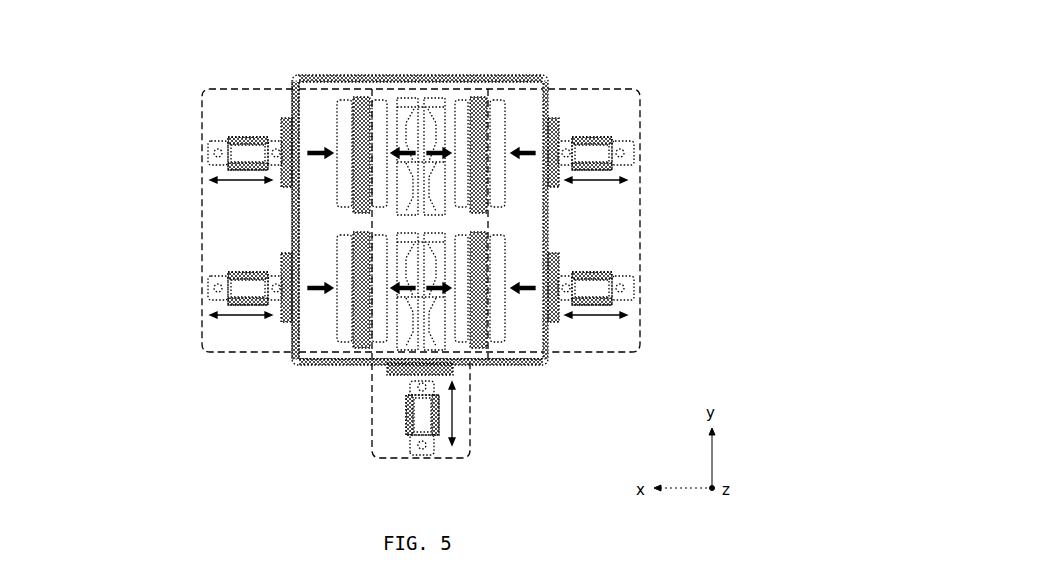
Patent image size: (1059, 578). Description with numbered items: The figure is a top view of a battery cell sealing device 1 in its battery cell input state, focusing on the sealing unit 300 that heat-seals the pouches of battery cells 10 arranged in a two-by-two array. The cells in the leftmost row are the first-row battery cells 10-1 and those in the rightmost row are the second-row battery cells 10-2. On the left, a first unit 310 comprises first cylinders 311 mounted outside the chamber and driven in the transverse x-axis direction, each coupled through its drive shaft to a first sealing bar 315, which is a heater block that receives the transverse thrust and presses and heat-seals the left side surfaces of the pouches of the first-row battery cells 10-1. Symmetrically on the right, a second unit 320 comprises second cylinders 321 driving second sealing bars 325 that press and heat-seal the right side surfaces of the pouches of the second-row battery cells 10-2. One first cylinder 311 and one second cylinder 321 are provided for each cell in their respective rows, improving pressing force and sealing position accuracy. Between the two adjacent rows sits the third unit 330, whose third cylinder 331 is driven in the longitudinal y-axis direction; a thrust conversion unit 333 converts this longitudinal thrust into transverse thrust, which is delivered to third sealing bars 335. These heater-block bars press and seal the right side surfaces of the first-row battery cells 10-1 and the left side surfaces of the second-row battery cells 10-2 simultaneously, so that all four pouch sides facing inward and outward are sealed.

The battery cell sealing device 1 is at (152, 36).
The battery cell 10 is at (412, 219).
The first-row battery cells 10-1 is at (356, 100).
The second-row battery cells 10-2 is at (472, 100).
The sealing unit 300 is at (501, 187).
The first unit 310 is at (192, 114).
The first cylinder 311 is at (205, 286).
The first sealing bar 315 is at (282, 334).
The second unit 320 is at (679, 114).
The second cylinder 321 is at (640, 291).
The second sealing bar 325 is at (549, 334).
The third unit 330 is at (511, 456).
The third cylinder 331 is at (403, 410).
The thrust conversion unit 333 is at (362, 363).
The third sealing bar 335 is at (557, 275).